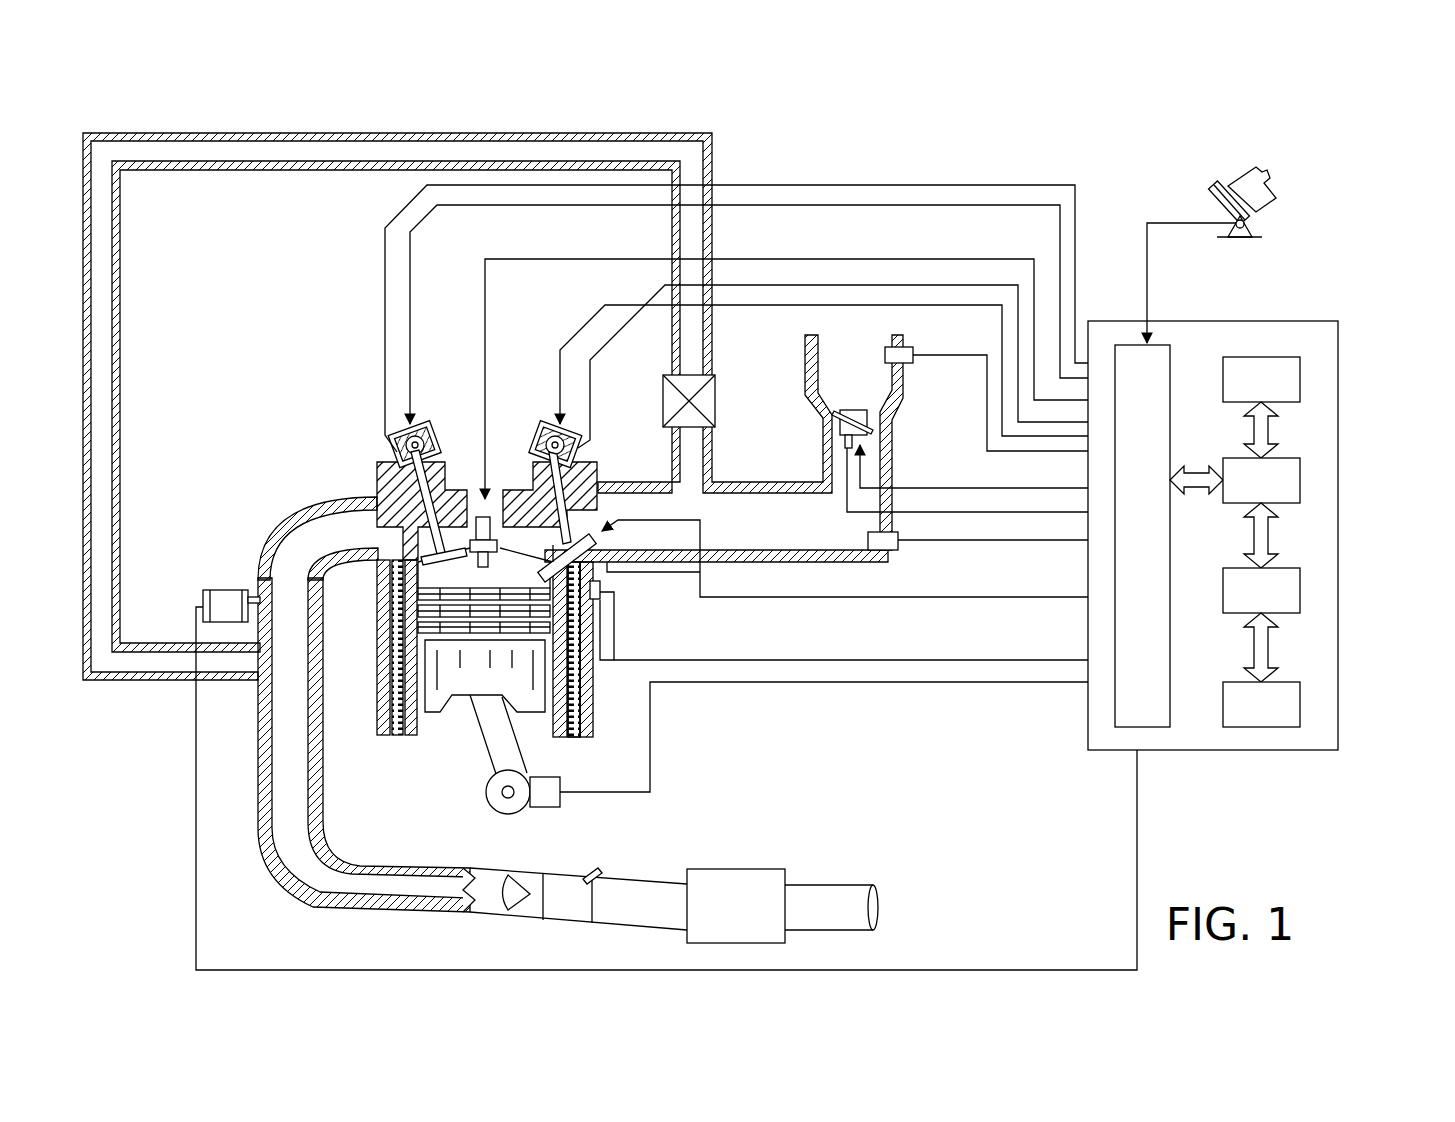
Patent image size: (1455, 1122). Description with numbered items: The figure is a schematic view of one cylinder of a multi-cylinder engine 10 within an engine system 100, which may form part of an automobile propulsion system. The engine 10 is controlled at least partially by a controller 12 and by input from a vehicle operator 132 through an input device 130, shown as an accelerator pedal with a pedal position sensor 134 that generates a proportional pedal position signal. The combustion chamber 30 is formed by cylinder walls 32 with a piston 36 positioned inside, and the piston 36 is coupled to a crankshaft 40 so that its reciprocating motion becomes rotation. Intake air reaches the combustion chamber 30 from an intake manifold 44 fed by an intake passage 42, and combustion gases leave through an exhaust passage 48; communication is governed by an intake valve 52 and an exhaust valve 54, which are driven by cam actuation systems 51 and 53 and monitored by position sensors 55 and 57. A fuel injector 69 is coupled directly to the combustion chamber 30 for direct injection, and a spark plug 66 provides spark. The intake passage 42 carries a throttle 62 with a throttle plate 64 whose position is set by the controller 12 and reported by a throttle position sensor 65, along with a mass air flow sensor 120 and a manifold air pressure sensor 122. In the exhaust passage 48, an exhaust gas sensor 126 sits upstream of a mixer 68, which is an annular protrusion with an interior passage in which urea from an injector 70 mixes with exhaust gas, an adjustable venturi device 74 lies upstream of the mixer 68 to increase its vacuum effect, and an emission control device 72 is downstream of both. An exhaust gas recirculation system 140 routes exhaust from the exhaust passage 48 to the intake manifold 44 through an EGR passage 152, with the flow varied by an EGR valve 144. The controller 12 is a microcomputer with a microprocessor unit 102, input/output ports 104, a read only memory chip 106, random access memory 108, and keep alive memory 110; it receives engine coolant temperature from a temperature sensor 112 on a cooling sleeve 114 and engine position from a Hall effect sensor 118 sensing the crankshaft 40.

The engine system 100 is at (1378, 103).
The engine 10 is at (305, 410).
The controller 12 is at (1338, 321).
The combustion chamber 30 is at (395, 683).
The cylinder walls 32 is at (420, 717).
The piston 36 is at (467, 680).
The crankshaft 40 is at (495, 806).
The intake passage 42 is at (869, 442).
The intake manifold 44 is at (716, 542).
The exhaust passage 48 is at (364, 704).
The cam actuation system 51 is at (545, 430).
The intake valve 52 is at (826, 524).
The cam actuation system 53 is at (426, 428).
The exhaust valve 54 is at (402, 488).
The position sensor 55 is at (566, 456).
The position sensor 57 is at (398, 448).
The throttle 62 is at (868, 420).
The throttle plate 64 is at (836, 415).
The throttle position sensor 65 is at (846, 446).
The spark plug 66 is at (487, 502).
The mixer 68 is at (575, 899).
The fuel injector 69 is at (590, 563).
The injector 70 is at (597, 872).
The emission control device 72 is at (782, 906).
The adjustable venturi device 74 is at (507, 912).
The microprocessor unit 102 is at (1300, 475).
The input/output ports 104 is at (1172, 352).
The read only memory chip 106 is at (1300, 375).
The random access memory 108 is at (1300, 585).
The keep alive memory 110 is at (1300, 700).
The temperature sensor 112 is at (601, 602).
The cooling sleeve 114 is at (587, 683).
The Hall effect sensor 118 is at (540, 807).
The mass air flow sensor 120 is at (908, 347).
The manifold air pressure sensor 122 is at (893, 550).
The exhaust gas sensor 126 is at (203, 598).
The input device 130 is at (1216, 192).
The vehicle operator 132 is at (1271, 184).
The pedal position sensor 134 is at (1262, 237).
The exhaust gas recirculation system 140 is at (558, 118).
The EGR valve 144 is at (716, 402).
The EGR passage 152 is at (390, 133).